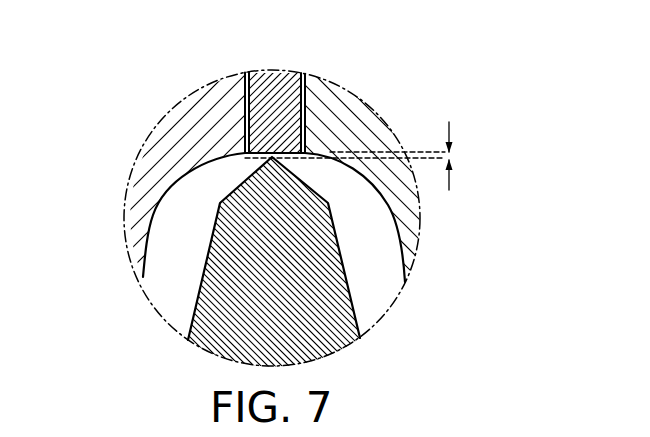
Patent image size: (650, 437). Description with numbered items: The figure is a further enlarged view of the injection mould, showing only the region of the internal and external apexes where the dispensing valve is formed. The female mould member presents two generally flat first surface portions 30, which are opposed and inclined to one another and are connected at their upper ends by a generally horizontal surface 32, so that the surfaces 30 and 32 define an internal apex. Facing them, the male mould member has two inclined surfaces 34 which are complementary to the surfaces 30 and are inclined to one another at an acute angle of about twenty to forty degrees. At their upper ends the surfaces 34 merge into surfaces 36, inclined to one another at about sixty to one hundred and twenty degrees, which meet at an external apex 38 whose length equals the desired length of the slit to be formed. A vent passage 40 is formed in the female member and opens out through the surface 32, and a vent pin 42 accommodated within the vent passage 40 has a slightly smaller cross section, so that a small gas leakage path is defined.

The first surface portions 30 is at (413, 252).
The generally horizontal surface 32 is at (312, 150).
The inclined surfaces 34 is at (350, 307).
The surfaces 36 is at (310, 185).
The external apex 38 is at (243, 157).
The vent passage 40 is at (247, 93).
The vent pin 42 is at (278, 83).